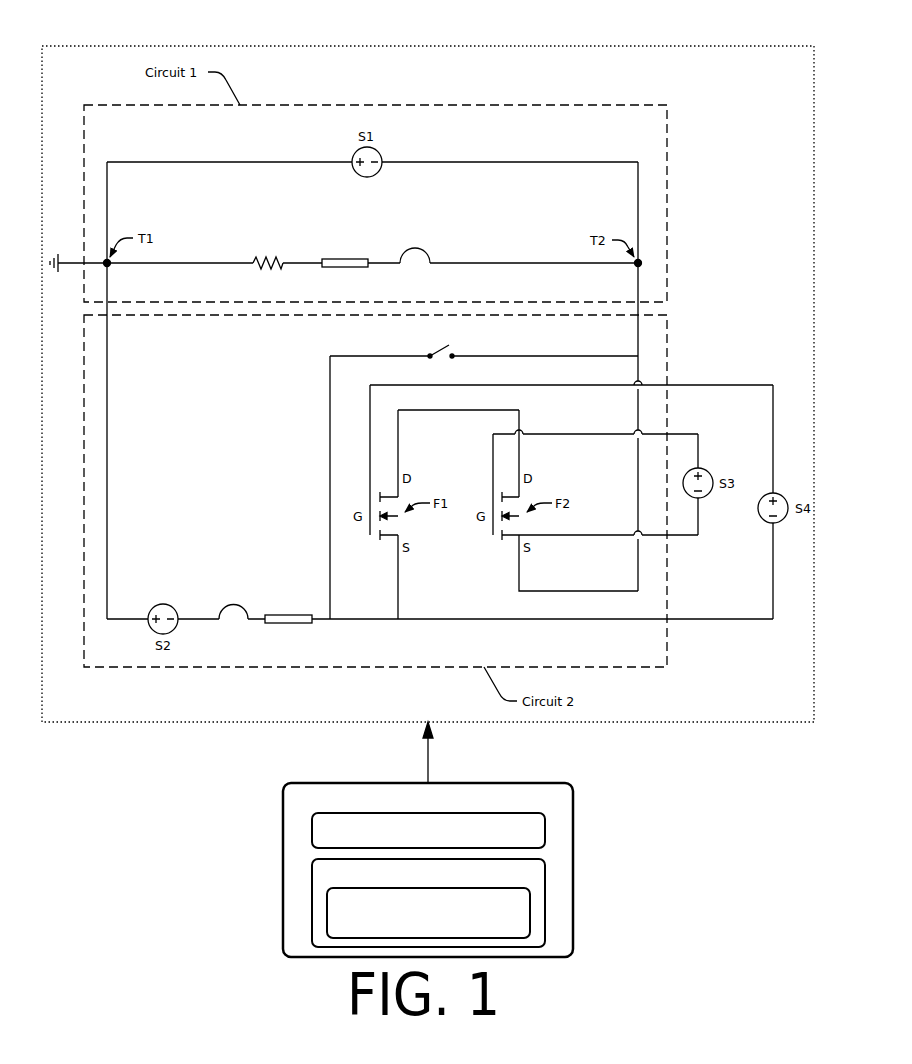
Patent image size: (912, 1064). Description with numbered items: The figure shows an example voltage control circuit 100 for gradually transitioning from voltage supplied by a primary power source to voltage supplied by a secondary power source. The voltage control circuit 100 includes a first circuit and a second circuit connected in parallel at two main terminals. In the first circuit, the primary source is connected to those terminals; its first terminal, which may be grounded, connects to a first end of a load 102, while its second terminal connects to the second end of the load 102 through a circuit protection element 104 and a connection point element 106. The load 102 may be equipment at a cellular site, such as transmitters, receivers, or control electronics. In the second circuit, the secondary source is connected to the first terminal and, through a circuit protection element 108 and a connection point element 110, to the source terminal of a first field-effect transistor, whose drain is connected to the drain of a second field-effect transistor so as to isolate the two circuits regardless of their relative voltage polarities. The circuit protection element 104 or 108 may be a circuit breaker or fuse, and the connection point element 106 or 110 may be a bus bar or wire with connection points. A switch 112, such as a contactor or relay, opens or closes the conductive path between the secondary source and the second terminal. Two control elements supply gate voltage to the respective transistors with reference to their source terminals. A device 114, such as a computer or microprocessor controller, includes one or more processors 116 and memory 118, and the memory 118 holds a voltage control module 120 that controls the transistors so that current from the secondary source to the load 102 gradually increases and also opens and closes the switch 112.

The voltage control circuit 100 is at (602, 46).
The load 102 is at (272, 252).
The circuit protection element 104 is at (422, 240).
The connection point element 106 is at (341, 254).
The circuit protection element 108 is at (229, 590).
The connection point element 110 is at (301, 609).
The switch 112 is at (432, 346).
The device 114 is at (428, 870).
The processors 116 is at (428, 830).
The memory 118 is at (428, 903).
The voltage control module 120 is at (428, 913).